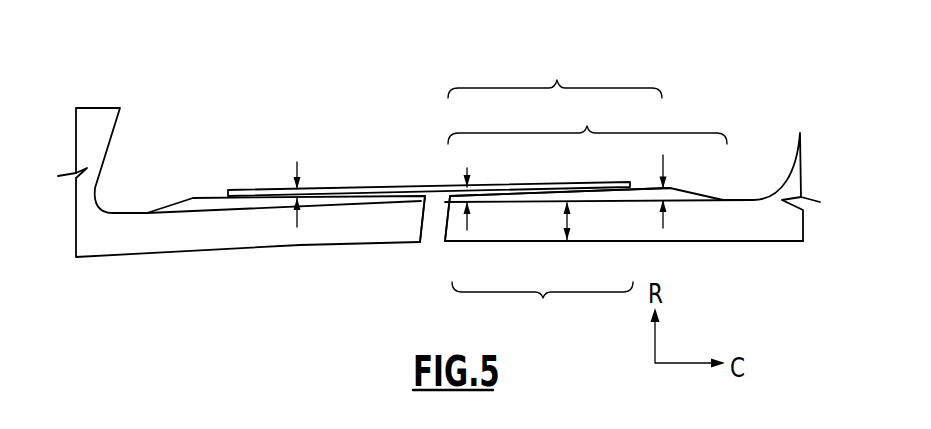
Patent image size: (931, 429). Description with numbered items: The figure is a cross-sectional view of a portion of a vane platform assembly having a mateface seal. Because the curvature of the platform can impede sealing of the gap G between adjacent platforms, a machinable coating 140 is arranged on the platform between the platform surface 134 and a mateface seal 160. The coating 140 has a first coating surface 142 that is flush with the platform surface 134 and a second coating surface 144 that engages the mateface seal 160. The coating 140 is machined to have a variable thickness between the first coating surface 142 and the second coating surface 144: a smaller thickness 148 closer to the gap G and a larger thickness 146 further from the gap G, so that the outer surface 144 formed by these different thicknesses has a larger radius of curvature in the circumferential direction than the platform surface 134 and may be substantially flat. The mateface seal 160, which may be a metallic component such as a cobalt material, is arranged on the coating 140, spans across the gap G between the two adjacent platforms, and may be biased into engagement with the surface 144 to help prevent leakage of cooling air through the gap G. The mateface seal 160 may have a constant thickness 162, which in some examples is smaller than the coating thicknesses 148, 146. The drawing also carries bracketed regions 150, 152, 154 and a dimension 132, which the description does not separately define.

The shell thickness 132 is at (568, 220).
The platform surface 134 is at (508, 202).
The coating 140 is at (647, 192).
The first coating surface 142 is at (597, 199).
The second coating surface 144 is at (530, 190).
The larger thickness 146 is at (663, 228).
The smaller thickness 148 is at (467, 168).
The panel region 150 is at (587, 119).
The overlap region 152 is at (555, 73).
The shell section 154 is at (542, 309).
The mateface seal 160 is at (318, 188).
The thickness 162 is at (297, 162).
The gap G is at (433, 235).